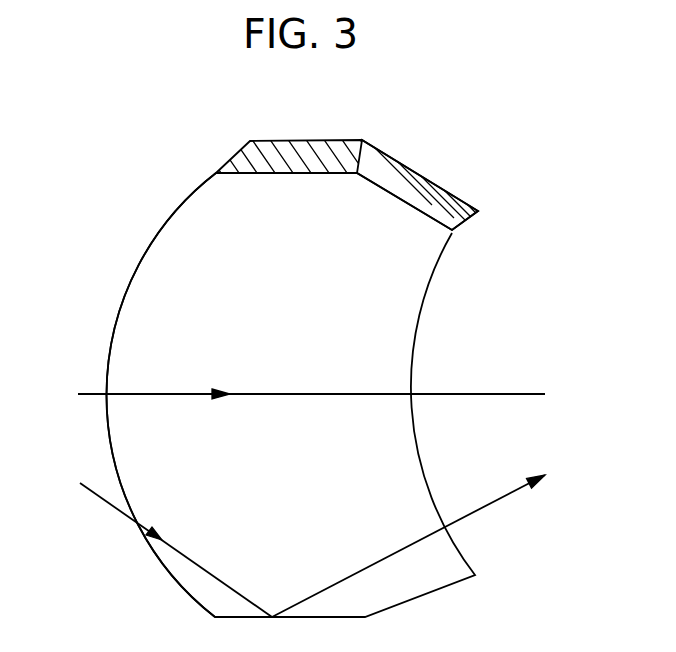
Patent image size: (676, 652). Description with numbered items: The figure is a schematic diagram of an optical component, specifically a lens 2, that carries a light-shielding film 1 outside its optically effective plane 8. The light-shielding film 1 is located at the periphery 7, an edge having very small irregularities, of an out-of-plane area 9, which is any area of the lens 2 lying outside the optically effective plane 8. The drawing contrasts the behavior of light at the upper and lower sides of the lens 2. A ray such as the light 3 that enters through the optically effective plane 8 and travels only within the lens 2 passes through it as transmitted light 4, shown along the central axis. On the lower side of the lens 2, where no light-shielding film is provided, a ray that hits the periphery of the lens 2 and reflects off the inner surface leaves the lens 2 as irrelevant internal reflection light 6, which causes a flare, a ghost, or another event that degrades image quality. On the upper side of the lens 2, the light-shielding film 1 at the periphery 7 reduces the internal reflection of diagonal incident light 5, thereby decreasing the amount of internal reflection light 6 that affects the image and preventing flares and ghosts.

The light-shielding film 1 is at (437, 197).
The lens 2 is at (348, 281).
The light 3 is at (302, 394).
The transmitted light 4 is at (483, 394).
The diagonal incident light 5 is at (166, 540).
The internal reflection light 6 is at (419, 540).
The periphery 7 is at (267, 175).
The optically effective plane 8 is at (108, 345).
The out-of-plane area 9 is at (403, 165).